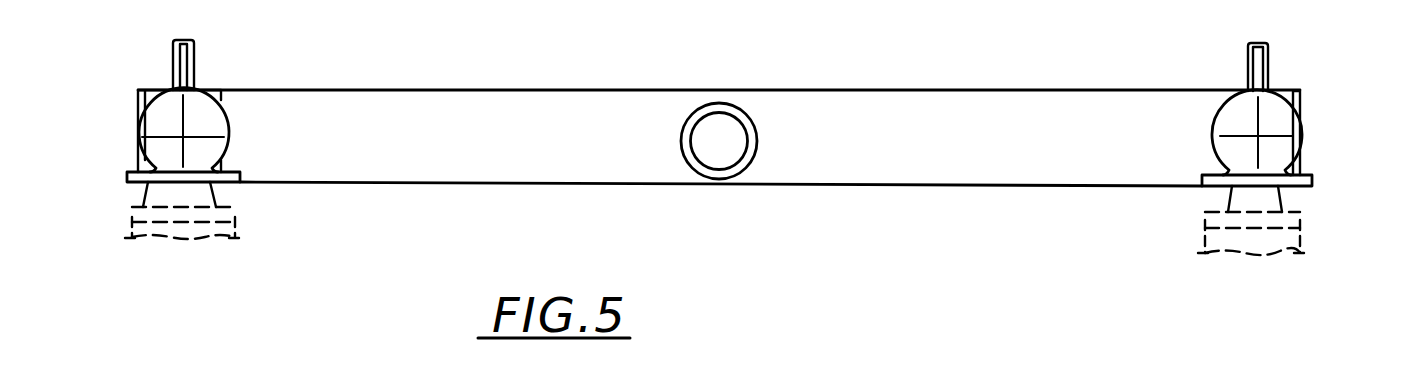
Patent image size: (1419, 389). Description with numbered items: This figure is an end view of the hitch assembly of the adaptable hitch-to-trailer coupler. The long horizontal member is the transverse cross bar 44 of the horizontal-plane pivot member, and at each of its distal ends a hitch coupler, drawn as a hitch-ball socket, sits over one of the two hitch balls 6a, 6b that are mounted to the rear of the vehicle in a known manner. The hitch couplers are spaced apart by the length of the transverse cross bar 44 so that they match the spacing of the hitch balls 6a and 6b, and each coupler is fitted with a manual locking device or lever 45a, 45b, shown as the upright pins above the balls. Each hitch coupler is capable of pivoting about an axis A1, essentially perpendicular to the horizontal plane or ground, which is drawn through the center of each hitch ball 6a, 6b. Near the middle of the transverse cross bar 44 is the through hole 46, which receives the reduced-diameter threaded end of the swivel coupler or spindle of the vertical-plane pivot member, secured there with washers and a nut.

The transverse cross bar 44 is at (847, 163).
The through hole 46 is at (717, 138).
The axis A1 is at (183, 128).
The manual locking device or lever 45a is at (172, 62).
The manual locking device or lever 45b is at (1267, 55).
The hitch ball 6a is at (192, 198).
The hitch ball 6b is at (1280, 202).